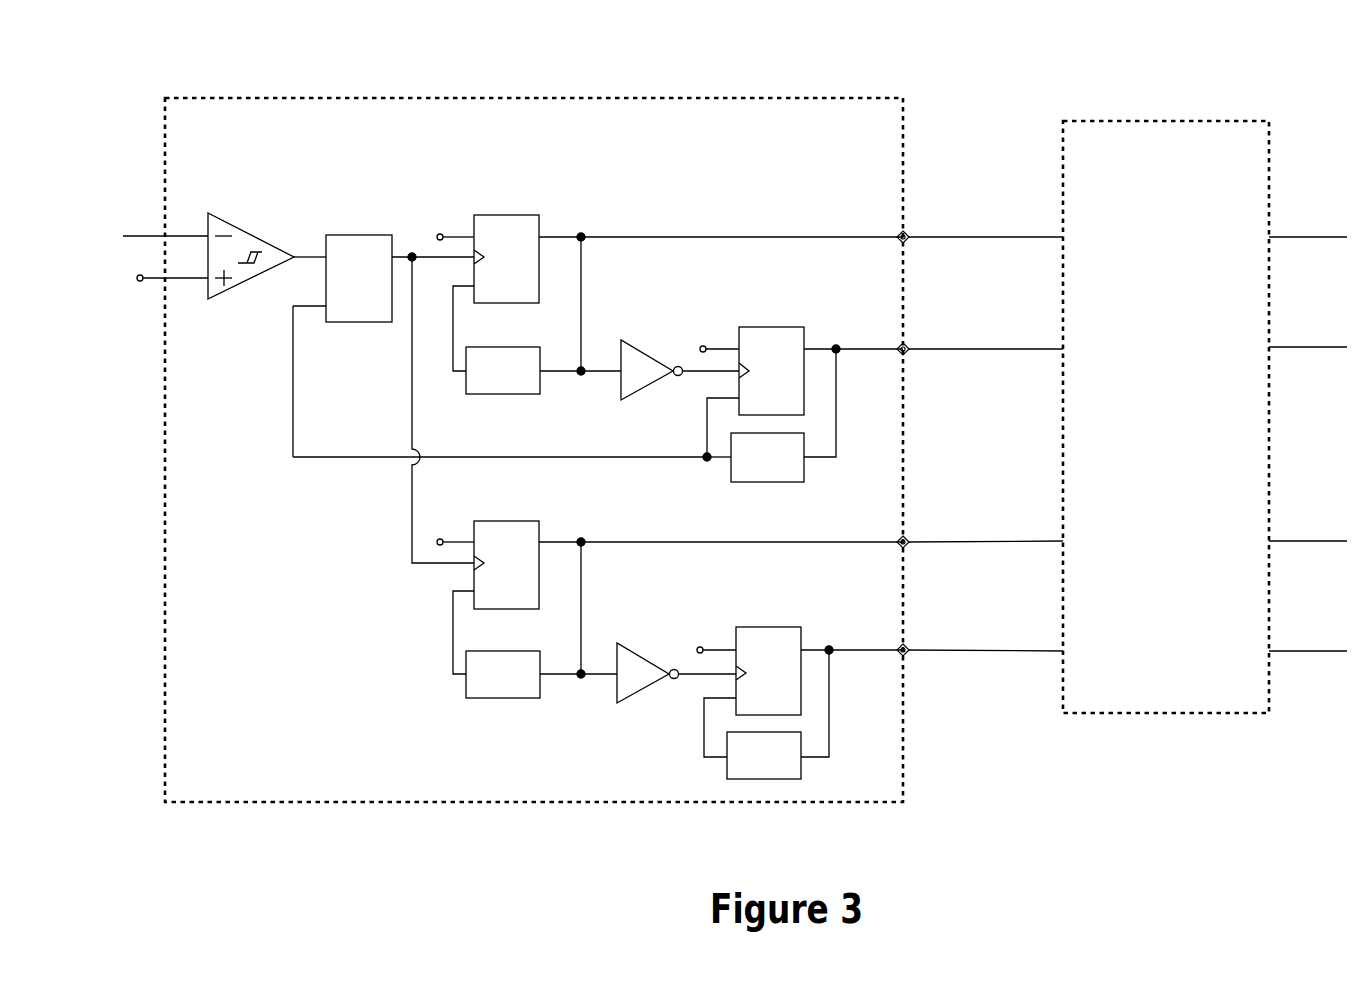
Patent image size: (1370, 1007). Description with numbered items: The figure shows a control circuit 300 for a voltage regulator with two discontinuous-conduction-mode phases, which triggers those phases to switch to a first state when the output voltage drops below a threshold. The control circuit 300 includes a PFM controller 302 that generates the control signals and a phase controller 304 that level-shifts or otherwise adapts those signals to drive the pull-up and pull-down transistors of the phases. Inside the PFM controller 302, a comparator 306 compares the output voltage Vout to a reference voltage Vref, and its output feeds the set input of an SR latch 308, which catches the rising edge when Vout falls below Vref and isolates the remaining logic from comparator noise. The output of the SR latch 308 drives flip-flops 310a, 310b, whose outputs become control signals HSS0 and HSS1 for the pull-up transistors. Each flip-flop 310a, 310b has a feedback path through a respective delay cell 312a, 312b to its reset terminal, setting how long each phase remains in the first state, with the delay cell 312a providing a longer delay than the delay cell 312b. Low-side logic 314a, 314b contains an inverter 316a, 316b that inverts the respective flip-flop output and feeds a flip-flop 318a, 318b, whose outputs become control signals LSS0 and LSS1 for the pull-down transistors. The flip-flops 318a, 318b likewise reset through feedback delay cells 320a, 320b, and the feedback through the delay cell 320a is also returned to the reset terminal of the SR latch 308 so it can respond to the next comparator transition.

The control circuit 300 is at (153, 84).
The PFM controller 302 is at (534, 450).
The phase controller 304 is at (1166, 417).
The comparator 306 is at (253, 226).
The SR latch 308 is at (358, 235).
The flip-flop 310a is at (499, 214).
The flip-flop 310b is at (500, 520).
The delay cell 312a is at (495, 395).
The delay cell 312b is at (495, 699).
The low-side logic 314a is at (677, 297).
The low-side logic 314b is at (677, 601).
The inverter 316a is at (658, 381).
The inverter 316b is at (655, 684).
The flip-flop 318a is at (771, 327).
The flip-flop 318b is at (769, 627).
The delay cell 320a is at (752, 483).
The delay cell 320b is at (750, 780).